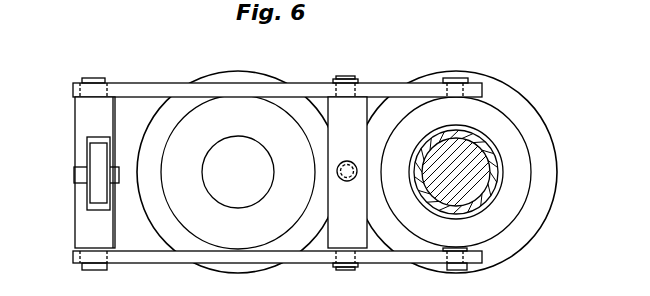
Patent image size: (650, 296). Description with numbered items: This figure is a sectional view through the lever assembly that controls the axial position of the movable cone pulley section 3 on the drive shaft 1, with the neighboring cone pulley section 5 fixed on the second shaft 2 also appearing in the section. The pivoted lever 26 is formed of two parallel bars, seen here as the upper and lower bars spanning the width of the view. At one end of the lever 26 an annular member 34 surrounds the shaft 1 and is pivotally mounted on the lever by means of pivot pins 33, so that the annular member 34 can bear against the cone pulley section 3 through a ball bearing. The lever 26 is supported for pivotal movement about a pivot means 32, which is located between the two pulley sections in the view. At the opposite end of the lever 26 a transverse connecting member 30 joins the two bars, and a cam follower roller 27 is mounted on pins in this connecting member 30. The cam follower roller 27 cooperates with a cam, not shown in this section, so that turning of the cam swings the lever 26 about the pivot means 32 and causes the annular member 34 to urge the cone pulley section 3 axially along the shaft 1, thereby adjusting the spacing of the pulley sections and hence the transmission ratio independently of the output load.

The shaft 1 is at (475, 186).
The shaft 2 is at (253, 165).
The cone pulley section 3 is at (510, 98).
The cone pulley section 5 is at (235, 80).
The pivoted lever 26 is at (128, 88).
The cam follower roller 27 is at (96, 192).
The transverse connecting member 30 is at (90, 117).
The pivot means 32 is at (350, 118).
The pivot pins 33 is at (455, 78).
The annular member 34 is at (513, 143).